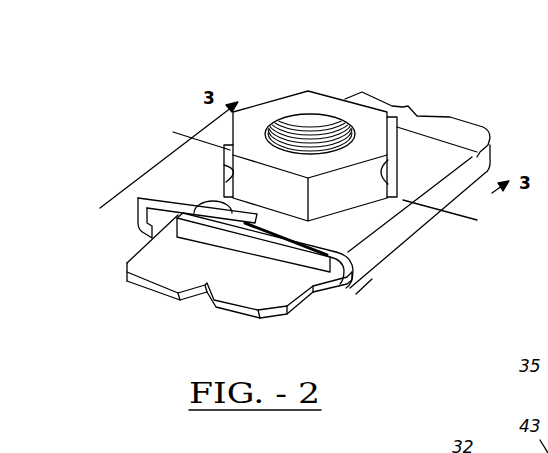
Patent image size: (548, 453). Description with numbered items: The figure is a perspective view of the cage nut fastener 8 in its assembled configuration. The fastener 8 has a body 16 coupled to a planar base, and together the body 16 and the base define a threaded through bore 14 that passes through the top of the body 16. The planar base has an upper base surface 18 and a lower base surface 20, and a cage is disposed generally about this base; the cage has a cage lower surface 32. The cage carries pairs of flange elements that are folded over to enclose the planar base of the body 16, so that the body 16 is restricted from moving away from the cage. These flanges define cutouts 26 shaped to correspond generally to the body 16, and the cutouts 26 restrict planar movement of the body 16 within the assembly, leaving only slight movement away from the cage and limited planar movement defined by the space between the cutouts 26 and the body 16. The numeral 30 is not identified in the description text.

The cage nut fastener 8 is at (114, 109).
The threaded through bore 14 is at (310, 114).
The body 16 is at (200, 230).
The upper base surface 18 is at (174, 239).
The lower base surface 20 is at (249, 256).
The cutouts 26 is at (233, 165).
The wings 30 is at (315, 288).
The cage lower surface 32 is at (158, 218).